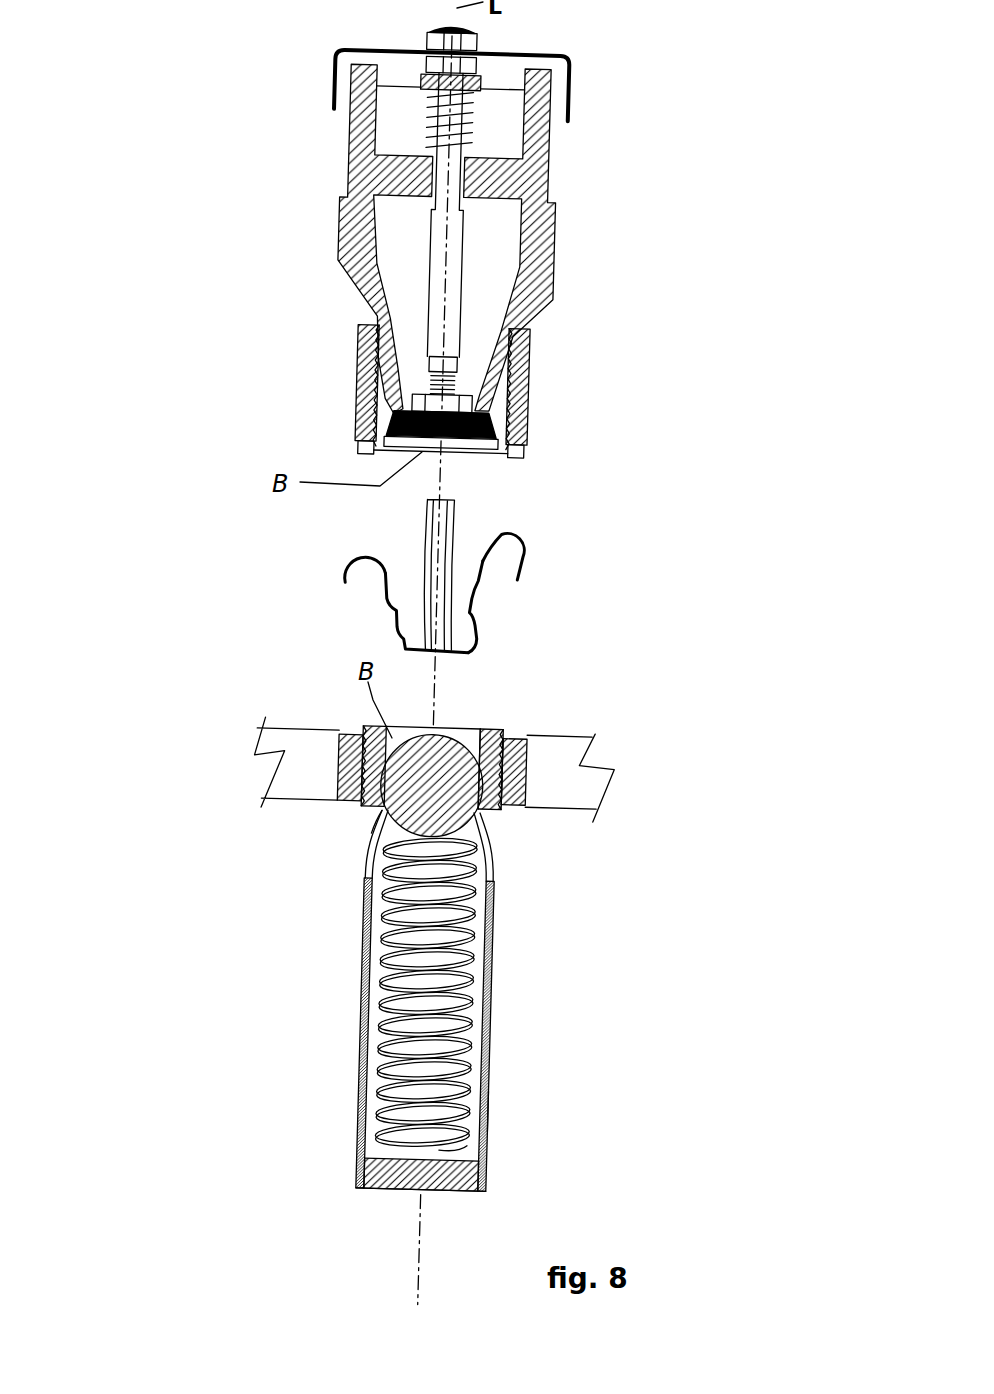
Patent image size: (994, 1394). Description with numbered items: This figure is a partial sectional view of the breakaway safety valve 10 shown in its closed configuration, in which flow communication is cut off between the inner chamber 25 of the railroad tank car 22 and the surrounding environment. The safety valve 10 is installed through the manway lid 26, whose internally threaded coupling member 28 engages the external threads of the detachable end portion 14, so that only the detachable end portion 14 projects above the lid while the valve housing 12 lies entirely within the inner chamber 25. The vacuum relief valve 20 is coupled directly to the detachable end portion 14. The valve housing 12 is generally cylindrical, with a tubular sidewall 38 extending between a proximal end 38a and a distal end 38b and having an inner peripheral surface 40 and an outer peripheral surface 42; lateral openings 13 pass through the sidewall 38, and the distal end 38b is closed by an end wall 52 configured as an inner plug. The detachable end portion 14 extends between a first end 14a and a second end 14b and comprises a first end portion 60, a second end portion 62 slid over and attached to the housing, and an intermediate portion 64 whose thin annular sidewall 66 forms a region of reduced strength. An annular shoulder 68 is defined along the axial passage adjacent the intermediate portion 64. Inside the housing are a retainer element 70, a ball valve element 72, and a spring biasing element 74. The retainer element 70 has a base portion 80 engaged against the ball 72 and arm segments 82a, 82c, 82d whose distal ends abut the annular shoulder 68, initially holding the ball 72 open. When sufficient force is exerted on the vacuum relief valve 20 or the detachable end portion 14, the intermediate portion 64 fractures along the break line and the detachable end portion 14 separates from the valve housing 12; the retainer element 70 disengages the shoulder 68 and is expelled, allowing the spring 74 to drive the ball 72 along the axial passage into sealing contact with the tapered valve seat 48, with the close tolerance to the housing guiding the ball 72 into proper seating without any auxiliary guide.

The safety valve 10 is at (170, 831).
The valve housing 12 is at (509, 973).
The lateral openings 13 is at (494, 868).
The detachable end portion 14 is at (335, 395).
The first end 14a is at (530, 327).
The second end 14b is at (507, 812).
The vacuum relief valve 20 is at (340, 250).
The railroad tank car 22 is at (649, 773).
The inner chamber 25 is at (599, 905).
The manway lid 26 is at (300, 733).
The coupling member 28 is at (548, 762).
The tubular sidewall 38 is at (492, 1108).
The proximal end 38a is at (464, 722).
The distal end 38b is at (477, 1192).
The inner peripheral surface 40 is at (470, 1027).
The outer peripheral surface 42 is at (490, 1063).
The valve seat 48 is at (390, 727).
The end wall 52 is at (397, 1187).
The first end portion 60 is at (537, 396).
The second end portion 62 is at (531, 748).
The intermediate portion 64 is at (523, 453).
The annular sidewall 66 is at (504, 466).
The annular shoulder 68 is at (388, 452).
The retainer element 70 is at (486, 597).
The valve element 72 is at (366, 830).
The biasing element 74 is at (366, 989).
The base portion 80 is at (458, 655).
The arm segment 82a is at (497, 562).
The arm segment 82c is at (385, 602).
The arm segment 82d is at (453, 514).